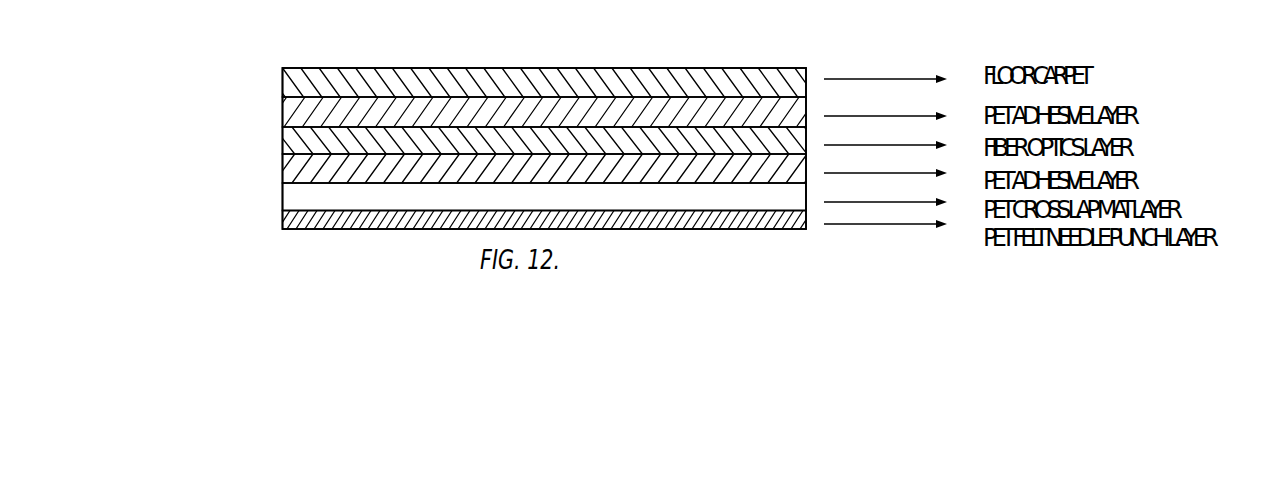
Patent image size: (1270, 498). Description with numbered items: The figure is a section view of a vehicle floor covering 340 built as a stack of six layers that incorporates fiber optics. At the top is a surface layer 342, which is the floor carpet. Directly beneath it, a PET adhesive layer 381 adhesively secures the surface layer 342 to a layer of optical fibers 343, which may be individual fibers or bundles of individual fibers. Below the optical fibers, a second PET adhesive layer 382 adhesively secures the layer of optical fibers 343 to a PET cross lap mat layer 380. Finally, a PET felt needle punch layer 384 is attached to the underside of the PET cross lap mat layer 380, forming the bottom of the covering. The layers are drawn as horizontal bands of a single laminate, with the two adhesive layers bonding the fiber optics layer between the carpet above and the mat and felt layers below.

The vehicle floor covering 340 is at (553, 38).
The surface layer 342 is at (282, 84).
The PET adhesive layer 381 is at (282, 113).
The layer of optical fibers 343 is at (282, 141).
The PET adhesive layer 382 is at (282, 170).
The PET cross lap mat layer 380 is at (282, 200).
The PET felt needle punch layer 384 is at (282, 223).